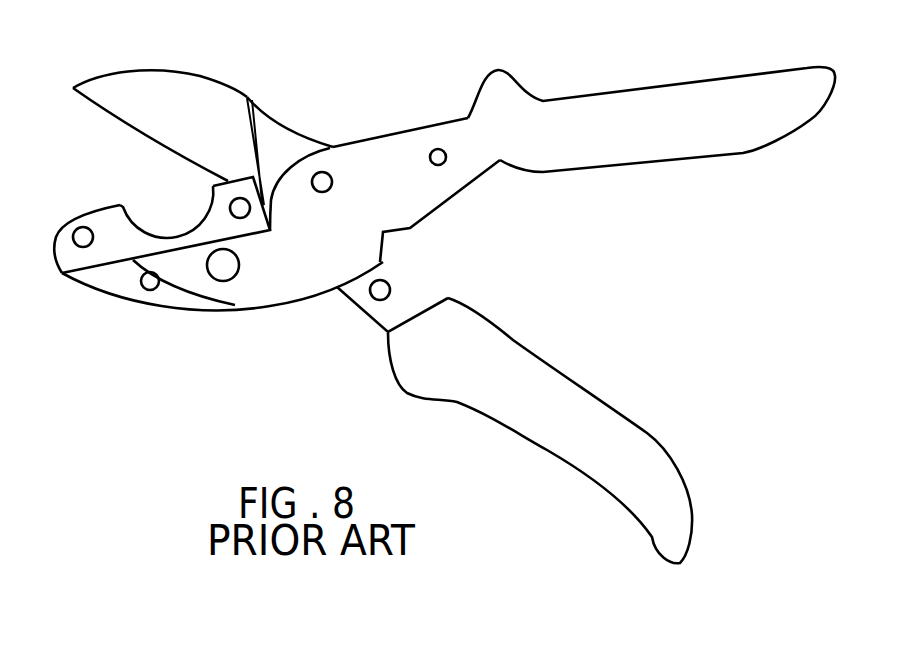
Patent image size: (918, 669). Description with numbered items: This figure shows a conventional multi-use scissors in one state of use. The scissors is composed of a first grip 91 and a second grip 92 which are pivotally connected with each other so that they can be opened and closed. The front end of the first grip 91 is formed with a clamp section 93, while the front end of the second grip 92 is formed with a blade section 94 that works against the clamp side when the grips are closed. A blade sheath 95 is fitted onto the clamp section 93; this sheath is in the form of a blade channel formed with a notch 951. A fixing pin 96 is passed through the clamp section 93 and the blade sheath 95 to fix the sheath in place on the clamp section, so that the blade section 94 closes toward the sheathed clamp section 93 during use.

The first grip 91 is at (380, 148).
The second grip 92 is at (395, 307).
The clamp section 93 is at (283, 277).
The blade section 94 is at (187, 87).
The blade sheath 95 is at (108, 245).
The notch 951 is at (126, 214).
The fixing pin 96 is at (223, 267).